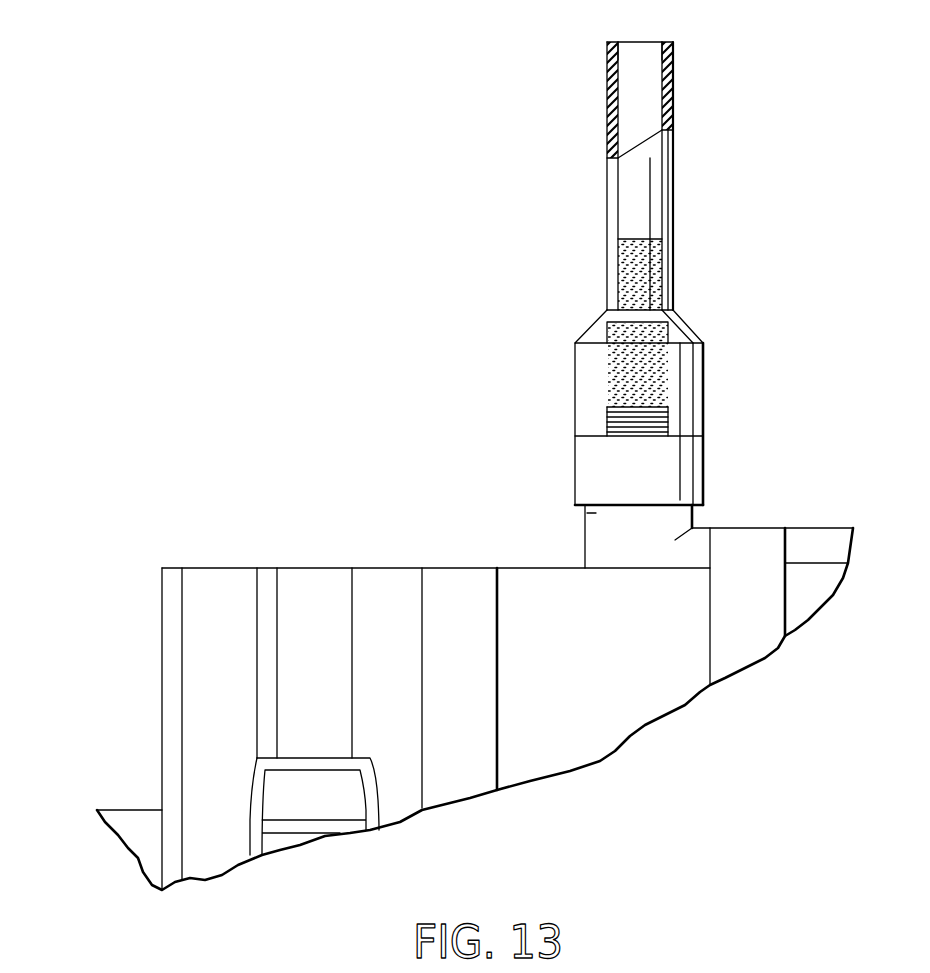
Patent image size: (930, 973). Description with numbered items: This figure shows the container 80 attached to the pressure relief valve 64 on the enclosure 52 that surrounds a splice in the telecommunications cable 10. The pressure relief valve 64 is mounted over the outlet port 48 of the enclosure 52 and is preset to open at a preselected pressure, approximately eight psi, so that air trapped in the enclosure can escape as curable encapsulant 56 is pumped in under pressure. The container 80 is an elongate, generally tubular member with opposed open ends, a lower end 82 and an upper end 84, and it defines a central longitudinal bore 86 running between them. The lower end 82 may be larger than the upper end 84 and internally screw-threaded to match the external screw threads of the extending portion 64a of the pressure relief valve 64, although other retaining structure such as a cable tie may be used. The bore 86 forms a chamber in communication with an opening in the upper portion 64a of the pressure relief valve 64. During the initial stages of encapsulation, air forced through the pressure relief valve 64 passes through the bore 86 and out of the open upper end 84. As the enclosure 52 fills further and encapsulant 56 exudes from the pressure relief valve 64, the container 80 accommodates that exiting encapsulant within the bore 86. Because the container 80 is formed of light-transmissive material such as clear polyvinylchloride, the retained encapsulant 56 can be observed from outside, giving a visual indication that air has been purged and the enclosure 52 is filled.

The telecommunications cable 10 is at (133, 815).
The enclosure 52 is at (603, 664).
The outlet port 48 is at (602, 528).
The lower end 82 is at (592, 368).
The pressure relief valve 64 is at (675, 468).
The extending portion 64a is at (668, 410).
The curable encapsulant 56 is at (650, 287).
The container 80 is at (673, 178).
The upper end 84 is at (670, 70).
The central longitudinal bore 86 is at (635, 52).